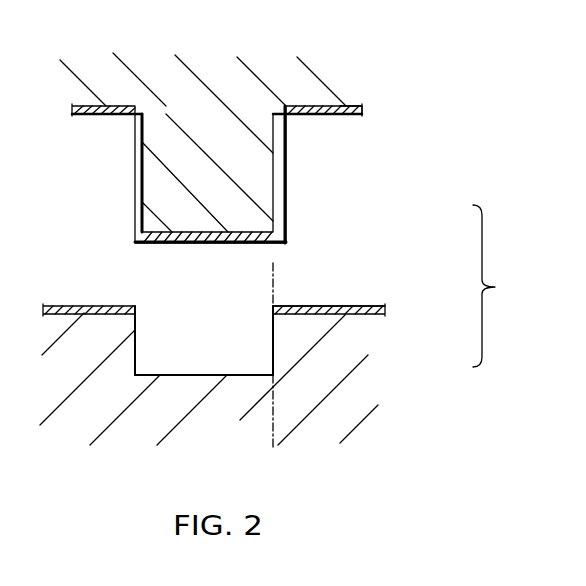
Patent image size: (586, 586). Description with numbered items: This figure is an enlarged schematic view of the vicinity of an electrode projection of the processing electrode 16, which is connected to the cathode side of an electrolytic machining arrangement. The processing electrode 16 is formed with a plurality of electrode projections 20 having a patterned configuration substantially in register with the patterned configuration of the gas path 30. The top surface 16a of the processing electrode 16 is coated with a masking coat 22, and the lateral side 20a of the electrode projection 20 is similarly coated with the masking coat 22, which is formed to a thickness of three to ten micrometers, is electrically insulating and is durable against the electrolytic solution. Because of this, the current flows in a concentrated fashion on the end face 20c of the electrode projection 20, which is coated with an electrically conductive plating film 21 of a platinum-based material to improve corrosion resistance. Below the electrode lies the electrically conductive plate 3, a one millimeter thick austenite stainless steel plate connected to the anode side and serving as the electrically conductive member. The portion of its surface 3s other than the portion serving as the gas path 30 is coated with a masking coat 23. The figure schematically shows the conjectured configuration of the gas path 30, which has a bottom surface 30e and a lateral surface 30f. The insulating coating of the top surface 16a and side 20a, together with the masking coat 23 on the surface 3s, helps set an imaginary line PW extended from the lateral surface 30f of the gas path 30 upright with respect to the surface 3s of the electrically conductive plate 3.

The processing electrode 16 is at (304, 92).
The top surface 16a is at (358, 112).
The electrode projection 20 is at (257, 172).
The lateral side 20a is at (138, 156).
The end face 20c is at (172, 246).
The electrically conductive plating film 21 is at (208, 245).
The masking coat 22 is at (96, 115).
The masking coat 23 is at (88, 304).
The electrically conductive plate 3 is at (343, 345).
The surface 3s is at (299, 306).
The gas path 30 is at (170, 362).
The lateral surface 30f is at (137, 347).
The bottom surface 30e is at (238, 372).
The imaginary line PW is at (268, 284).